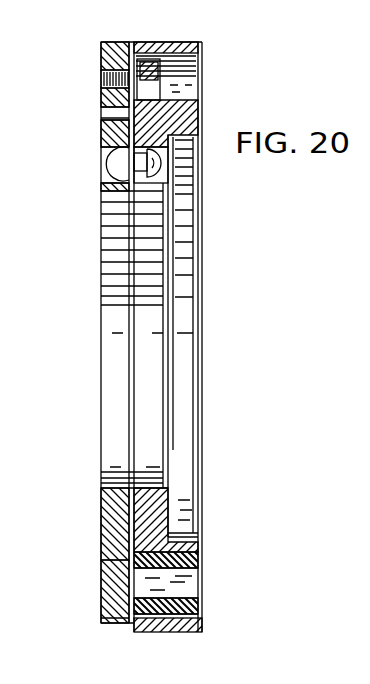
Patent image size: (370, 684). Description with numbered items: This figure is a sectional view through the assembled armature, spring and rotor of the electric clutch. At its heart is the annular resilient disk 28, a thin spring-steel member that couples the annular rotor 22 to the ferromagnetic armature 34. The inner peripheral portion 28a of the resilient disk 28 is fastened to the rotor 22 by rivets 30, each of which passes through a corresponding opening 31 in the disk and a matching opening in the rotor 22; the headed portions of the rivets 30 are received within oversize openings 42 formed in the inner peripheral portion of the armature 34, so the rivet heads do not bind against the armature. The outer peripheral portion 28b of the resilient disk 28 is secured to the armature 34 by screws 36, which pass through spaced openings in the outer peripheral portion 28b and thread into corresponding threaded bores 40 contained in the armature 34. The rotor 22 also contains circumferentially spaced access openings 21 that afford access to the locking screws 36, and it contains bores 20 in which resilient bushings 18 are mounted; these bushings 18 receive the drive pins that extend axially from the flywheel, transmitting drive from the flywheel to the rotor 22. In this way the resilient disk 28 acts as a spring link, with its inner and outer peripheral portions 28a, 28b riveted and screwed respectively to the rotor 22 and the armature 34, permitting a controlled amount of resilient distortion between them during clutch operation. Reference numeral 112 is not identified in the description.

The resilient disk 28 is at (126, 43).
The screw 36 is at (156, 72).
The access opening 21 is at (198, 70).
The rotor 22 is at (188, 120).
The threaded bore 40 is at (103, 70).
The collar 112 is at (103, 111).
The oversize opening 42 is at (104, 154).
The opening 31 is at (122, 160).
The rivet 30 is at (168, 150).
The inner peripheral portion 28a is at (107, 510).
The outer peripheral portion 28b is at (107, 577).
The armature 34 is at (108, 613).
The resilient bushing 18 is at (200, 558).
The bore 20 is at (202, 598).